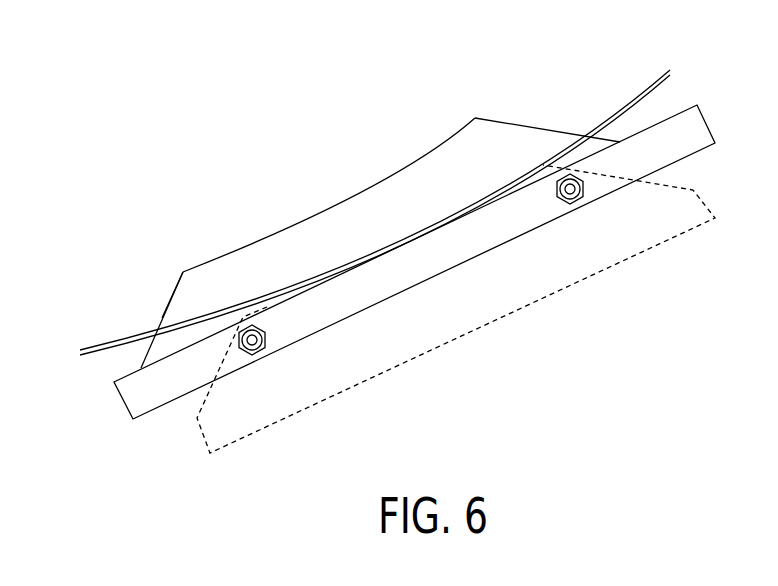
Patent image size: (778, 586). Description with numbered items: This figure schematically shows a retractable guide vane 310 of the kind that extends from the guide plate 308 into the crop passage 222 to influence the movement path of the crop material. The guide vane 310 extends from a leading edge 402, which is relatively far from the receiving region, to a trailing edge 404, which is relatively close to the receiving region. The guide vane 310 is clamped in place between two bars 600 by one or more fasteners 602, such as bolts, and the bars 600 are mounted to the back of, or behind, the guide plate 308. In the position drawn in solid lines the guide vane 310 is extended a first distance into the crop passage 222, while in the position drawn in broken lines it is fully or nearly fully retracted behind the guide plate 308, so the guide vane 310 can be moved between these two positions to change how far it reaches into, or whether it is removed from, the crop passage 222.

The crop passage 222 is at (256, 180).
The guide plate 308 is at (133, 333).
The guide vane 310 is at (445, 150).
The leading edge 402 is at (159, 318).
The trailing edge 404 is at (520, 123).
The bar 600 is at (143, 389).
The fastener 602 is at (266, 352).